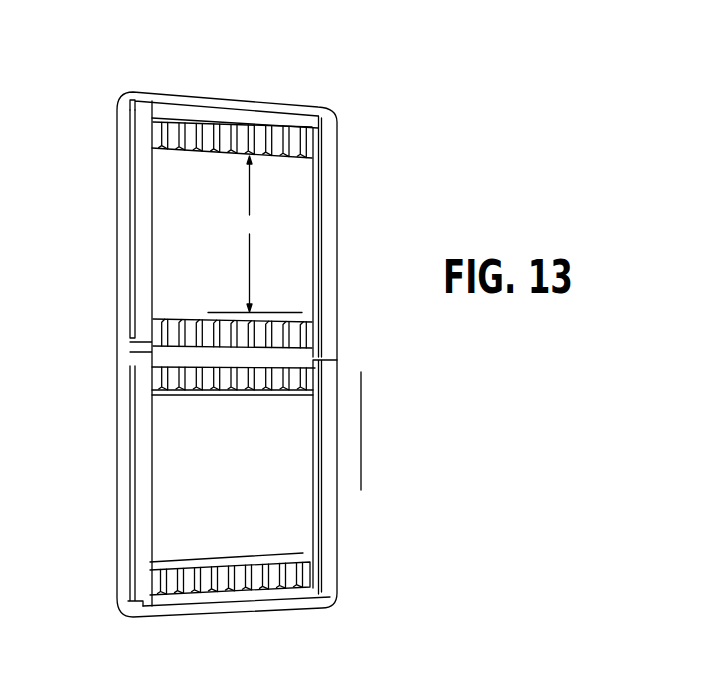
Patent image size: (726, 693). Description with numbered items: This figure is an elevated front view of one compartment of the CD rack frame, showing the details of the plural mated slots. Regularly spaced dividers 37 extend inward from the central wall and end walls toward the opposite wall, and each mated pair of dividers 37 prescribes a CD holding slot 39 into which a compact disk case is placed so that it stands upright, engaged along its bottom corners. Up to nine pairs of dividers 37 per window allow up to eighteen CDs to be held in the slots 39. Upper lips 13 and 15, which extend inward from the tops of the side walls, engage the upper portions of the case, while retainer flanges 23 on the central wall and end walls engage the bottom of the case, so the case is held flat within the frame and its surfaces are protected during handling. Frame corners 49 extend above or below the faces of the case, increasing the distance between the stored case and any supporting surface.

The upper lip 13 is at (140, 208).
The upper lip 15 is at (330, 252).
The retainer flange 23 is at (197, 397).
The divider 37 is at (255, 234).
The mated slot 39 is at (252, 158).
The frame corner 49 is at (128, 107).